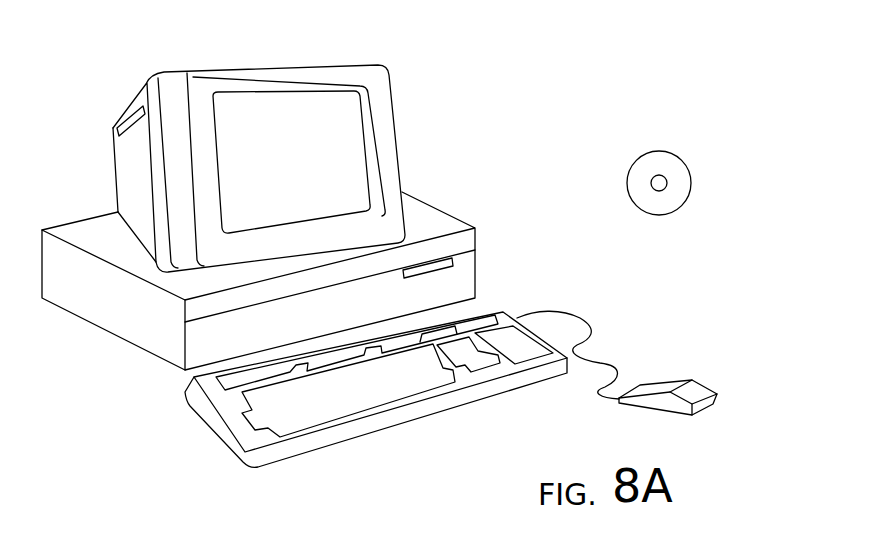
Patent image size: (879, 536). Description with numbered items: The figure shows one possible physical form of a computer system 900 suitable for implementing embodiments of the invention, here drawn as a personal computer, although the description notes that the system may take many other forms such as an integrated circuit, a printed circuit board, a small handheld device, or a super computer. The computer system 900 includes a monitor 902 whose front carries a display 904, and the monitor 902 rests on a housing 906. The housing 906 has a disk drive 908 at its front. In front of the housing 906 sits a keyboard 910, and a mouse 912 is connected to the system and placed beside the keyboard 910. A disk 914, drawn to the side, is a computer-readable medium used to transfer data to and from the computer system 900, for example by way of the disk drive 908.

The computer system 900 is at (581, 46).
The monitor 902 is at (399, 166).
The display 904 is at (358, 121).
The housing 906 is at (153, 355).
The disk drive 908 is at (453, 255).
The keyboard 910 is at (385, 424).
The mouse 912 is at (707, 383).
The disk 914 is at (677, 154).